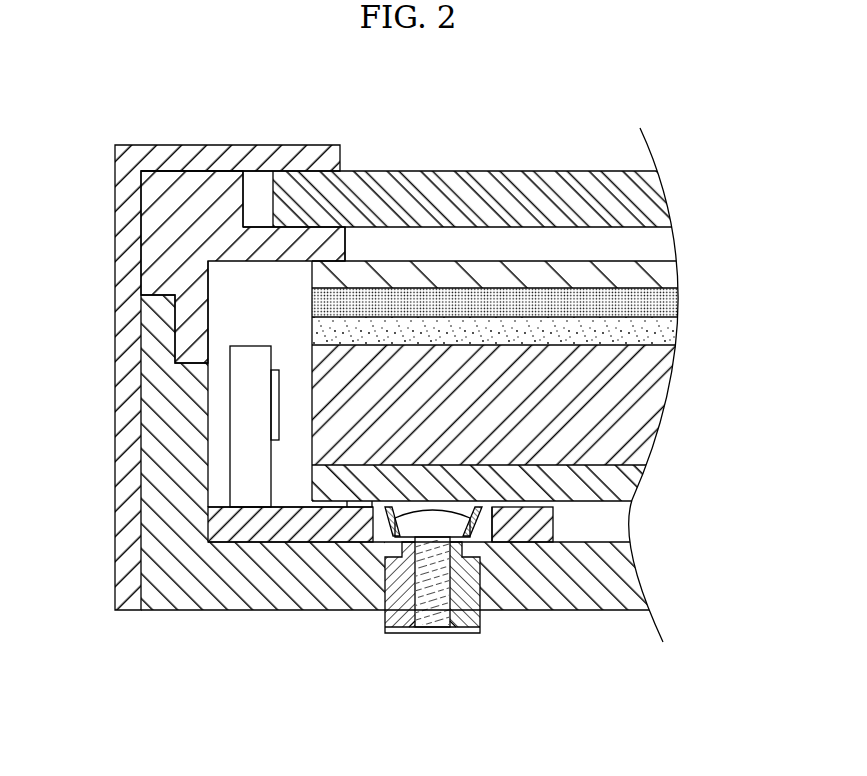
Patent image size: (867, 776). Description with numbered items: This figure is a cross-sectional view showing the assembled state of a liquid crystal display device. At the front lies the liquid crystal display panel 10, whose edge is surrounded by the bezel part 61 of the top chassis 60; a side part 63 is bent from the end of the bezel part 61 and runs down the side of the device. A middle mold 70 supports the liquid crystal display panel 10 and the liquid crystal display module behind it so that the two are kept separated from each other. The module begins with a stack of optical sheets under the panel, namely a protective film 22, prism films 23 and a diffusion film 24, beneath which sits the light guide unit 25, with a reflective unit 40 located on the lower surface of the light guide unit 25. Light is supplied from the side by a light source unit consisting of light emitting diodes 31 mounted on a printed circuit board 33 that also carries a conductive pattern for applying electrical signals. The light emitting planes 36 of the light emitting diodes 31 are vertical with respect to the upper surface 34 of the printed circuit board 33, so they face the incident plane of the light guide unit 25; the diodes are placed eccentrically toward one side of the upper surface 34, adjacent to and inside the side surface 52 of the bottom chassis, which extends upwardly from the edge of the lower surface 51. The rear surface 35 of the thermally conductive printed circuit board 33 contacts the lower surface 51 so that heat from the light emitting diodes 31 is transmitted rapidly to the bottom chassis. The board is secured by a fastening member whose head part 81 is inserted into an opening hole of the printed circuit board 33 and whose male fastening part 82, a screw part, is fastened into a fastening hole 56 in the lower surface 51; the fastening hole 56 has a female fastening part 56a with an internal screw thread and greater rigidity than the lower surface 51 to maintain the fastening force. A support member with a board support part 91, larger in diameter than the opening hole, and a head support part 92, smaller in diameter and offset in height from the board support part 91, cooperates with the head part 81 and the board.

The liquid crystal display panel 10 is at (655, 202).
The protective film 22 is at (670, 272).
The prism films 23 is at (667, 303).
The diffusion film 24 is at (667, 328).
The light guide unit 25 is at (633, 413).
The light emitting diodes 31 is at (240, 437).
The printed circuit board 33 is at (545, 522).
The upper surface 34 is at (286, 500).
The rear surfaces 35 is at (252, 542).
The light emitting planes 36 is at (282, 406).
The reflective unit 40 is at (625, 487).
The lower surface 51 is at (585, 597).
The side surfaces 52 is at (167, 483).
The fastening holes 56 is at (430, 600).
The female fastening part 56a is at (470, 628).
The top chassis 60 is at (141, 193).
The bezel part 61 is at (248, 146).
The side part 63 is at (130, 297).
The middle mold 70 is at (170, 228).
The head part 81 is at (405, 528).
The male fastening part 82 is at (437, 595).
The board support part 91 is at (503, 510).
The head support part 92 is at (473, 545).